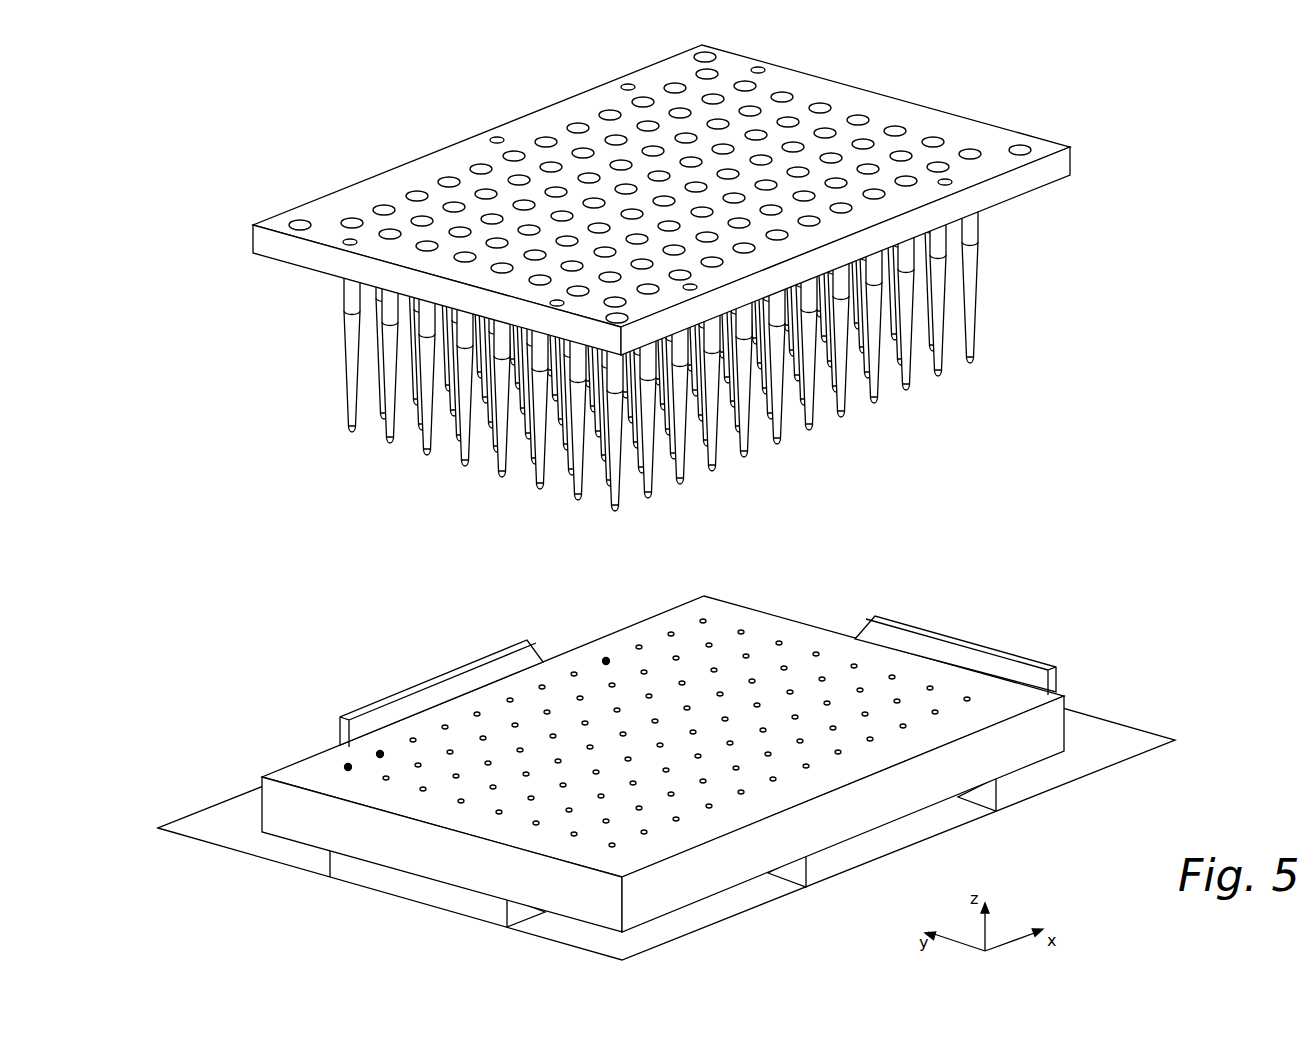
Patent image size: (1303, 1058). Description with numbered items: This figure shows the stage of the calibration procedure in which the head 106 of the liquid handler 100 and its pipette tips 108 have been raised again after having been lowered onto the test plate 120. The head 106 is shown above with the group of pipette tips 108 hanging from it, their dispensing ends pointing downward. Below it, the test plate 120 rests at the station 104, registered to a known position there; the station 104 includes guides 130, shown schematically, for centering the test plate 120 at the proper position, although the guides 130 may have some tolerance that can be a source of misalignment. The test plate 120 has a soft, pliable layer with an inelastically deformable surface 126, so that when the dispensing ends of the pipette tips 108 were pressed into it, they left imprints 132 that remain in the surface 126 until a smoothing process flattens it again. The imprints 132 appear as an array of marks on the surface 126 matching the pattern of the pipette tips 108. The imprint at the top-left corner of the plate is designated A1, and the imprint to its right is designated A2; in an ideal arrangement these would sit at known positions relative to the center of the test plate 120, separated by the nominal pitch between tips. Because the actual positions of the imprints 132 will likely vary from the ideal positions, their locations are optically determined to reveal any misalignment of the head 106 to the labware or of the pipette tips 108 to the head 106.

The liquid handler 100 is at (108, 251).
The station 104 is at (1124, 741).
The head 106 is at (957, 118).
The pipette tips 108 is at (970, 372).
The test plate 120 is at (1021, 700).
The inelastically deformable surface 126 is at (298, 770).
The guides 130 is at (520, 655).
The imprints 132 is at (606, 661).
The imprint position A1 is at (348, 767).
The imprint position A2 is at (380, 754).